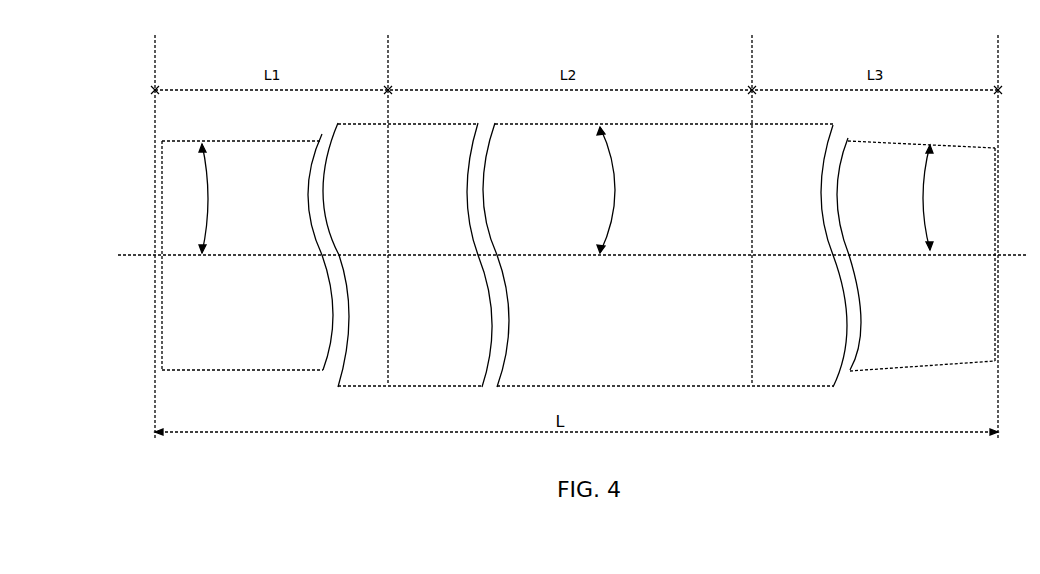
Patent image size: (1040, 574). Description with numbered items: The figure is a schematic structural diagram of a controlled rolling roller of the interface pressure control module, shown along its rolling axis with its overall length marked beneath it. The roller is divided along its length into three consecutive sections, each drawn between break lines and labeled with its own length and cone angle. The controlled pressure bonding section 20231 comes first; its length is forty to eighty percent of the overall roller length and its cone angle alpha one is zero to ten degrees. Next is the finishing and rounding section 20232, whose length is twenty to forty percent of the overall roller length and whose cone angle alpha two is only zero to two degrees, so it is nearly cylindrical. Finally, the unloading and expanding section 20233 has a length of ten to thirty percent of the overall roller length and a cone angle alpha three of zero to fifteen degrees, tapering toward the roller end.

The controlled pressure bonding section 20231 is at (255, 213).
The finishing and rounding section 20232 is at (585, 213).
The unloading and expanding section 20233 is at (908, 213).